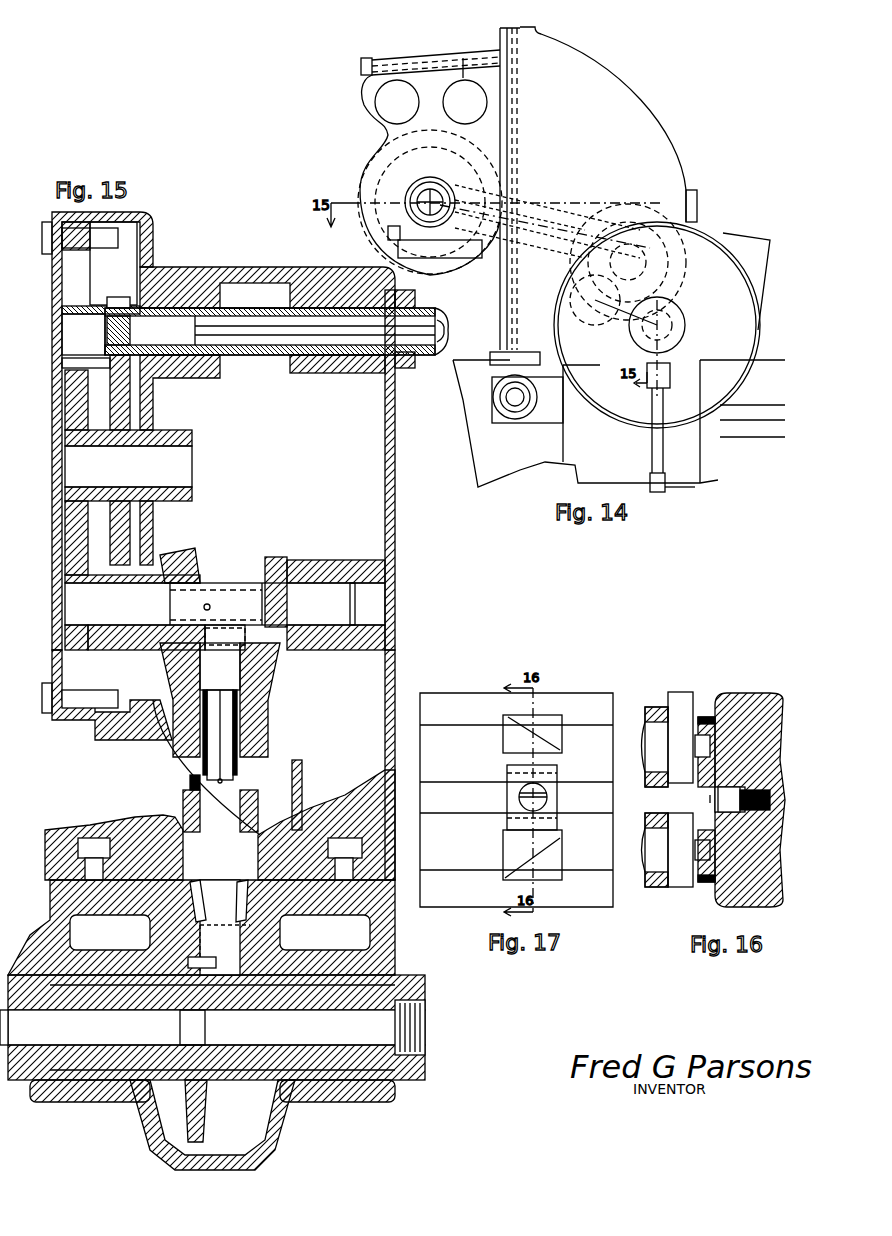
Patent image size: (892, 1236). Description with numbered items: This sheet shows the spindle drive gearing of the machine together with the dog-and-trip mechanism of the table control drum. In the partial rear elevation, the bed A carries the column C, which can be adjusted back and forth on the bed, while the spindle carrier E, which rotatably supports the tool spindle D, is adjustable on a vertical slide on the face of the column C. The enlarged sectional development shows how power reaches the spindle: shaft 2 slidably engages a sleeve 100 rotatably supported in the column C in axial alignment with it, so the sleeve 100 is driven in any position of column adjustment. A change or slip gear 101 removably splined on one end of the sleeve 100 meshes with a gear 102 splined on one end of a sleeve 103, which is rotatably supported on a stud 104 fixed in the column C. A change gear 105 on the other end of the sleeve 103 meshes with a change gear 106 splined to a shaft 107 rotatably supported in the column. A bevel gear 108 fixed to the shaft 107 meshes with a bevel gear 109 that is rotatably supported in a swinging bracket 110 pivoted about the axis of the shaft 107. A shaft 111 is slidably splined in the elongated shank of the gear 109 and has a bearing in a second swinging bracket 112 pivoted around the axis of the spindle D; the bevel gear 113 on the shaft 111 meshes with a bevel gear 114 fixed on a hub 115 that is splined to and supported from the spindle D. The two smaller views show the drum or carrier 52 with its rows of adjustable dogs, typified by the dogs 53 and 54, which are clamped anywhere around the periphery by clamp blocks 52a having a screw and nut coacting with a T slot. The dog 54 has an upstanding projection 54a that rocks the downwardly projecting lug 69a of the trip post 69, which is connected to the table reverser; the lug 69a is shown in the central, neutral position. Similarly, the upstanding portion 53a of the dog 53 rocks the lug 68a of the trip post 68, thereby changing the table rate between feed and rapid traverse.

In FIG. 15, the shaft 2 is at (436, 312).
In FIG. 15, the sleeve 100 is at (245, 352).
In FIG. 15, the change or slip gear 101 is at (118, 297).
In FIG. 15, the gear 102 is at (130, 388).
In FIG. 15, the sleeve 103 is at (180, 398).
In FIG. 15, the stud 104 is at (183, 463).
In FIG. 15, the change gear 105 is at (70, 410).
In FIG. 15, the change gear 106 is at (66, 646).
In FIG. 15, the shaft 107 is at (225, 595).
In FIG. 15, the bevel gear 108 is at (188, 562).
In FIG. 15, the bevel gear 109 is at (245, 652).
In FIG. 15, the swinging bracket 110 is at (272, 672).
In FIG. 15, the shaft 111 is at (203, 772).
In FIG. 15, the swinging bracket 112 is at (258, 822).
In FIG. 15, the bevel gear 113 is at (243, 920).
In FIG. 15, the bevel gear 114 is at (200, 1125).
In FIG. 15, the hub 115 is at (216, 963).
In FIG. 17, the drum or carrier 52 is at (457, 696).
In FIG. 16, the drum or carrier 52 is at (757, 698).
In FIG. 17, the clamp block 52a is at (507, 790).
In FIG. 16, the clamp block 52a is at (715, 783).
In FIG. 17, the dog 53 is at (503, 845).
In FIG. 16, the dog 53 is at (712, 882).
In FIG. 16, the upstanding portion 53a is at (703, 882).
In FIG. 17, the dog 54 is at (503, 745).
In FIG. 16, the dog 54 is at (722, 722).
In FIG. 16, the upstanding projection 54a is at (706, 716).
In FIG. 16, the trip post 68 is at (648, 868).
In FIG. 16, the lug 68a is at (695, 850).
In FIG. 16, the trip post 69 is at (648, 732).
In FIG. 16, the lug 69a is at (695, 748).
In FIG. 14, the bed A is at (464, 432).
In FIG. 15, the column C is at (198, 270).
In FIG. 14, the column C is at (641, 112).
In FIG. 15, the tool spindle D is at (18, 975).
In FIG. 14, the tool spindle D is at (434, 194).
In FIG. 15, the spindle carrier E is at (385, 948).
In FIG. 14, the spindle carrier E is at (378, 127).